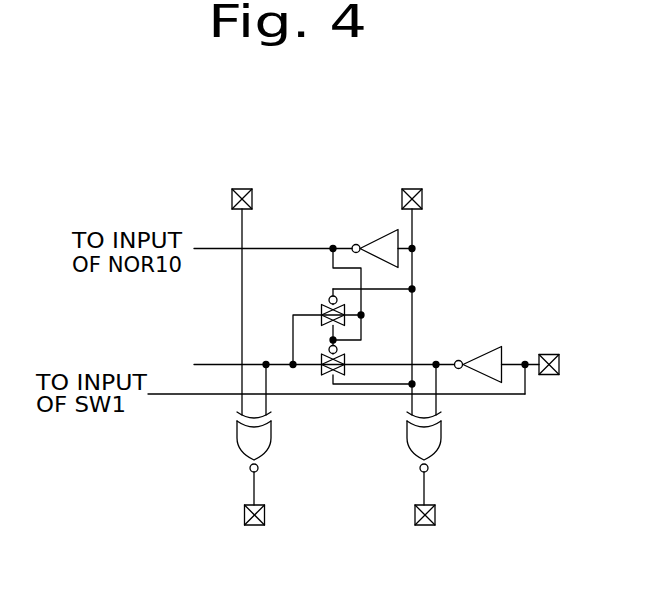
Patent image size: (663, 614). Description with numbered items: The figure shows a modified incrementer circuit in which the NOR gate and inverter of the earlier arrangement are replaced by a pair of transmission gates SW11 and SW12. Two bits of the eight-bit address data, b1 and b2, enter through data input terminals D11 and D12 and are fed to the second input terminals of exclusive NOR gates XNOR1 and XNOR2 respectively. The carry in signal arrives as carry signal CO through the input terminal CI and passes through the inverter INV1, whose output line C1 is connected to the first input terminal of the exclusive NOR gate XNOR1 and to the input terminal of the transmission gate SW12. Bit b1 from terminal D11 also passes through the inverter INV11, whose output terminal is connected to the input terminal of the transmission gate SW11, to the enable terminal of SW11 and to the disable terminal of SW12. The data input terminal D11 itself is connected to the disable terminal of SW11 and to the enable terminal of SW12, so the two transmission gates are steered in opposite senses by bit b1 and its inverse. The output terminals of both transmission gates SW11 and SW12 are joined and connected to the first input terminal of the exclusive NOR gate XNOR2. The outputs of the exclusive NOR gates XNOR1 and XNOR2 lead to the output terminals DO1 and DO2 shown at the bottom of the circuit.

The data input terminal D12 is at (252, 188).
The data input terminal D11 is at (415, 188).
The address data bit b2 is at (234, 290).
The address data bit b1 is at (404, 290).
The inverter INV11 is at (381, 238).
The transmission gate SW11 is at (321, 306).
The transmission gate SW12 is at (345, 373).
The inverted carry signal line C1-bar C1 is at (190, 351).
The inverter INV1 is at (495, 347).
The carry signal CO is at (519, 359).
The input terminal CI is at (552, 375).
The exclusive NOR gate XNOR2 is at (270, 445).
The exclusive NOR gate XNOR1 is at (441, 445).
The data output pad DO2 is at (257, 526).
The data output pad DO1 is at (430, 526).